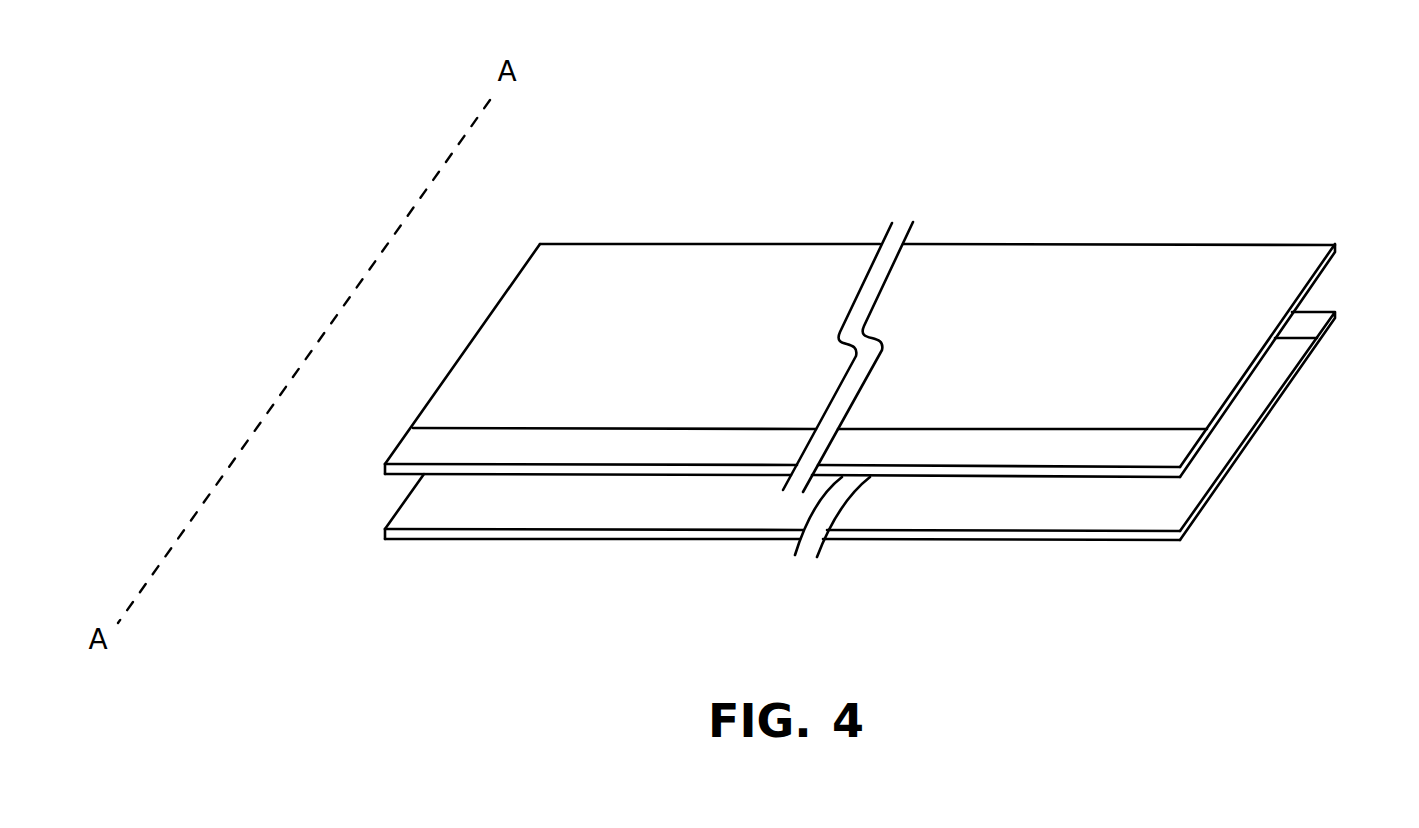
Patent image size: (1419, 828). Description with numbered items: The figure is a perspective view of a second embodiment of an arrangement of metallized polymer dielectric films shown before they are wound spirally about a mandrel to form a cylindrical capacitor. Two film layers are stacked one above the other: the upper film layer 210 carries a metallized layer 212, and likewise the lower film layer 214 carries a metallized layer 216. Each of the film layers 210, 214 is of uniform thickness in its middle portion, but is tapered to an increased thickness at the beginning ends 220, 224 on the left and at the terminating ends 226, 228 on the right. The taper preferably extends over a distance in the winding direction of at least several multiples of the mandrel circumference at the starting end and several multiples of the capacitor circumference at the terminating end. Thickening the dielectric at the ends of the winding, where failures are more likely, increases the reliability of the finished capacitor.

The film layer 210 is at (888, 330).
The metallized layer 212 is at (800, 262).
The film layer 214 is at (816, 457).
The metallized layer 216 is at (698, 505).
The beginning end 220 is at (452, 367).
The beginning end 224 is at (398, 500).
The terminating end 226 is at (1323, 270).
The terminating end 228 is at (1250, 437).